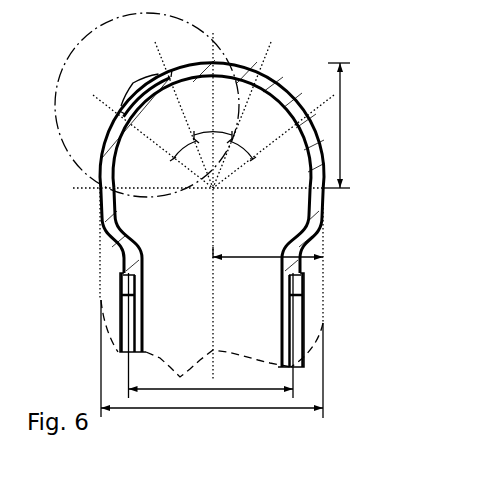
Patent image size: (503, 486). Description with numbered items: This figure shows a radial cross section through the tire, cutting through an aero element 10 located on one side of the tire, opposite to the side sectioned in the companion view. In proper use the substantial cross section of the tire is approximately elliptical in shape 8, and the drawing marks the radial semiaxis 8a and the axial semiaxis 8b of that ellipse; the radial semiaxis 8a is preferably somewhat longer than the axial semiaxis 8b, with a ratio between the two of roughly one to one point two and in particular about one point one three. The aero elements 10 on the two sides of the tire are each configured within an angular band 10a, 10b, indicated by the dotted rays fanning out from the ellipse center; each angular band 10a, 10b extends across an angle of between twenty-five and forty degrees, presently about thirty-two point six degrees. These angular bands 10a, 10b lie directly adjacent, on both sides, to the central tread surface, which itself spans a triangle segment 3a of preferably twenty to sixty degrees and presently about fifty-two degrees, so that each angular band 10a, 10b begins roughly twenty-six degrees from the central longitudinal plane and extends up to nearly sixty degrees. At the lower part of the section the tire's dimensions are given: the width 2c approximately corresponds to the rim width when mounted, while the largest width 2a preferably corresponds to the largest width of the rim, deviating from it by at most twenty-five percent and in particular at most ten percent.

The width 2a is at (259, 409).
The width 2c is at (216, 390).
The triangle segment 3a is at (211, 131).
The elliptical shape 8 is at (282, 55).
The radial semiaxis 8a is at (341, 126).
The axial semiaxis 8b is at (247, 256).
The aero element 10 is at (98, 75).
The angular band 10a is at (133, 83).
The angular band 10b is at (243, 148).